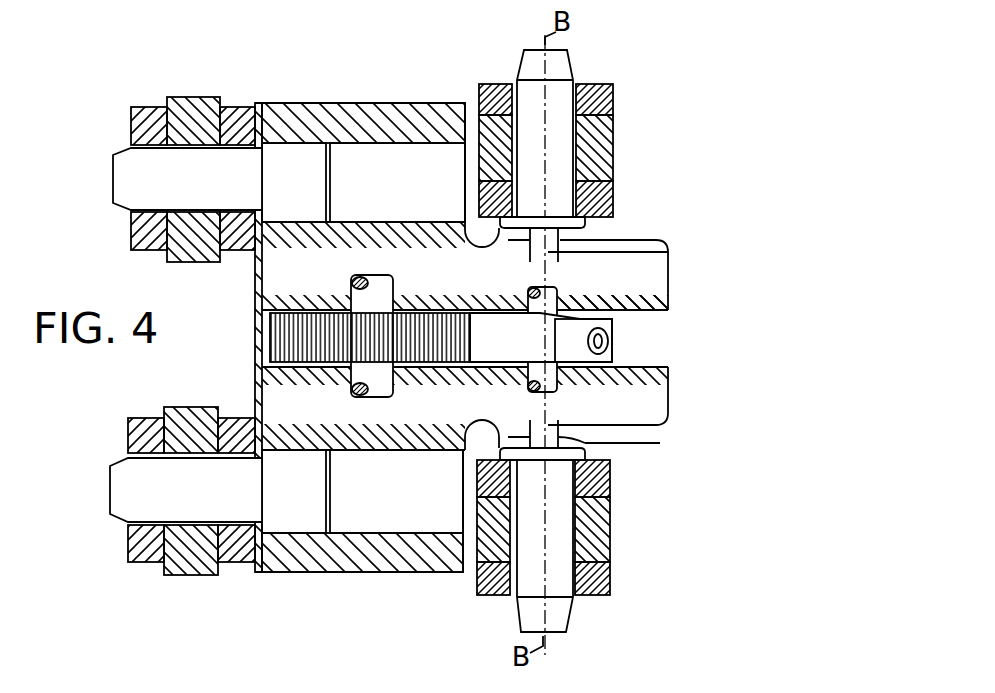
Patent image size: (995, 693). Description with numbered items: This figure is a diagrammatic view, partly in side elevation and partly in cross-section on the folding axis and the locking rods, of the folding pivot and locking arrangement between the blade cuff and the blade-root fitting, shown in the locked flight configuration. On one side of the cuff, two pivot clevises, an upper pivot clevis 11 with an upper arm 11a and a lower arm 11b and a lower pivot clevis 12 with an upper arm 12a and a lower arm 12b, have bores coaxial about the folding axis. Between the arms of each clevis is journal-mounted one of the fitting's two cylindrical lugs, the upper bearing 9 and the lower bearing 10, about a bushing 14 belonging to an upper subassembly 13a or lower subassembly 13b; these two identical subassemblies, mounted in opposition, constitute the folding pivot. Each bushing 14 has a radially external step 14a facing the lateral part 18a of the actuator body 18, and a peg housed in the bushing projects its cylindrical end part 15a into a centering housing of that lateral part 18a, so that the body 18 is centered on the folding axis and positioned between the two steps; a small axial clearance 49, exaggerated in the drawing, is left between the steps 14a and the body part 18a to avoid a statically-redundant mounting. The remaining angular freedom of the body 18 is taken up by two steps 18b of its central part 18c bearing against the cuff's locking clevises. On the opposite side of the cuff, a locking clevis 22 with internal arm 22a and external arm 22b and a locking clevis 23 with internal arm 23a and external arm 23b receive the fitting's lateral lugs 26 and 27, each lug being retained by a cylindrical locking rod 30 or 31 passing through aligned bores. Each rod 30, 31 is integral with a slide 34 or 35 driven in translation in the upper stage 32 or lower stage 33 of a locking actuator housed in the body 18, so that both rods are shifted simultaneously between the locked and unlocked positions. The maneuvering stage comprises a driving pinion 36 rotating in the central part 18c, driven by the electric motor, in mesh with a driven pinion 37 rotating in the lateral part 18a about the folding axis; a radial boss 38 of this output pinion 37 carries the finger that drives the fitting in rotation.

The upper bearing 9 is at (598, 142).
The lower bearing 10 is at (585, 527).
The upper pivot clevis 11 is at (500, 81).
The upper arm 11a is at (603, 103).
The lower arm 11b is at (590, 198).
The lower pivot clevis 12 is at (480, 597).
The upper arm 12a is at (610, 488).
The lower arm 12b is at (590, 575).
The upper subassembly 13a is at (578, 52).
The lower subassembly 13b is at (558, 636).
The bushing 14 is at (557, 108).
The radially external step 14a is at (577, 222).
The cylindrical end part 15a is at (655, 250).
The actuator body 18 is at (433, 102).
The lateral part 18a is at (650, 280).
The steps 18b is at (250, 105).
The central part 18c is at (326, 272).
The locking clevis 22 is at (133, 106).
The internal arm 22a is at (241, 118).
The external arm 22b is at (150, 230).
The locking clevis 23 is at (126, 537).
The internal arm 23a is at (240, 543).
The external arm 23b is at (150, 443).
The lateral lug 26 is at (190, 97).
The lateral lug 27 is at (190, 428).
The locking rod 30 is at (173, 183).
The locking rod 31 is at (147, 490).
The upper stage 32 is at (387, 172).
The lower stage 33 is at (422, 507).
The slide 34 is at (308, 168).
The slide 35 is at (292, 507).
The driving pinion 36 is at (305, 347).
The driven pinion 37 is at (508, 332).
The radial boss 38 is at (577, 335).
The axial clearance 49 is at (555, 235).